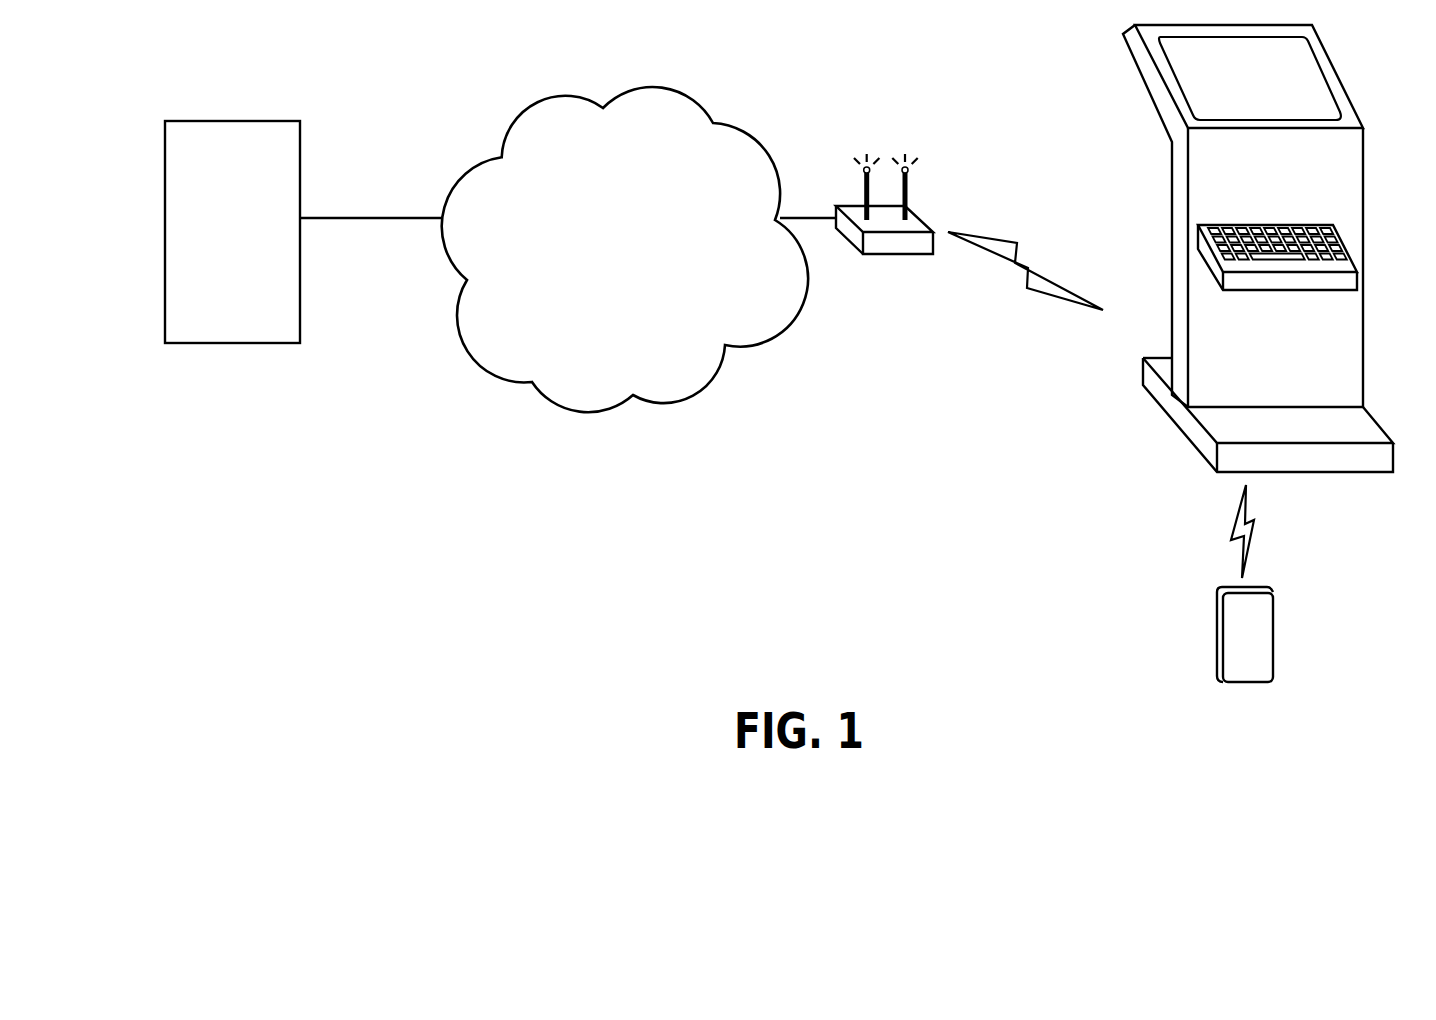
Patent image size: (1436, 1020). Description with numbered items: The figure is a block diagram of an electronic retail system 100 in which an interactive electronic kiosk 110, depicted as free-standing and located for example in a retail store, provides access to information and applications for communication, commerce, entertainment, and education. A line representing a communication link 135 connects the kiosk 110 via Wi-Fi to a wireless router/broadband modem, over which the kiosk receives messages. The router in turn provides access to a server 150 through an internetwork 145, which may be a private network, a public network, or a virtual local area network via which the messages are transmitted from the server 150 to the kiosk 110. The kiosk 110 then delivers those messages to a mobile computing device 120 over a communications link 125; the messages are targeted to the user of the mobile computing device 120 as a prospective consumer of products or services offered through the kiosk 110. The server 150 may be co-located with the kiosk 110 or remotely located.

The electronic retail system 100 is at (612, 546).
The interactive electronic kiosk 110 is at (1249, 354).
The mobile computing device 120 is at (1273, 630).
The communications link 125 is at (1264, 531).
The communication link 135 is at (1025, 265).
The internetwork 145 is at (603, 232).
The server 150 is at (215, 202).